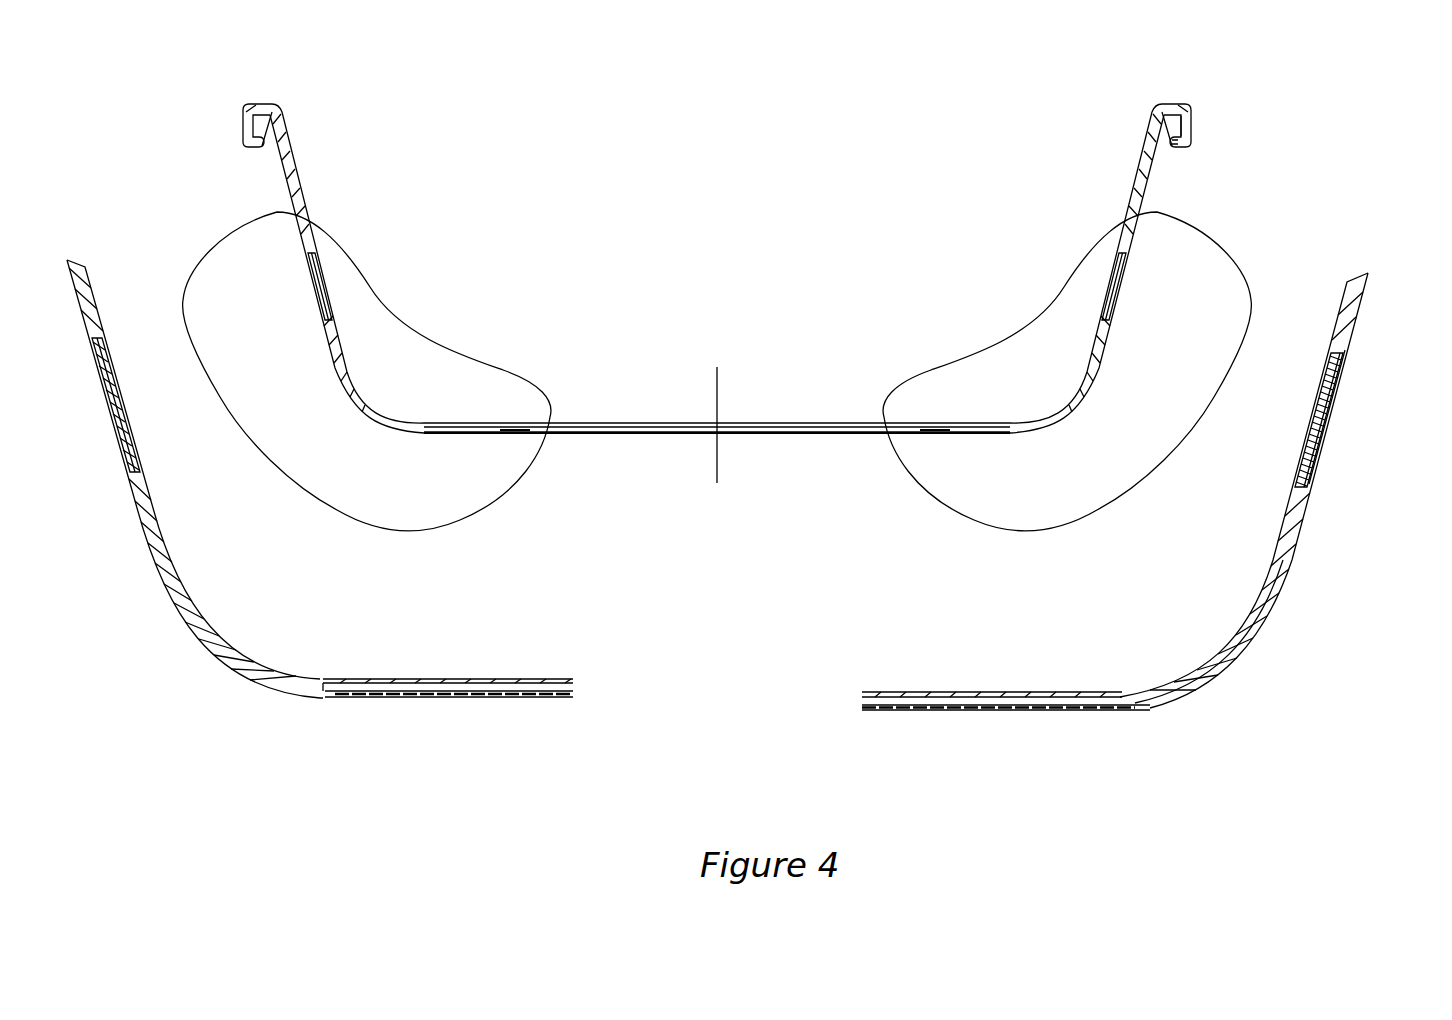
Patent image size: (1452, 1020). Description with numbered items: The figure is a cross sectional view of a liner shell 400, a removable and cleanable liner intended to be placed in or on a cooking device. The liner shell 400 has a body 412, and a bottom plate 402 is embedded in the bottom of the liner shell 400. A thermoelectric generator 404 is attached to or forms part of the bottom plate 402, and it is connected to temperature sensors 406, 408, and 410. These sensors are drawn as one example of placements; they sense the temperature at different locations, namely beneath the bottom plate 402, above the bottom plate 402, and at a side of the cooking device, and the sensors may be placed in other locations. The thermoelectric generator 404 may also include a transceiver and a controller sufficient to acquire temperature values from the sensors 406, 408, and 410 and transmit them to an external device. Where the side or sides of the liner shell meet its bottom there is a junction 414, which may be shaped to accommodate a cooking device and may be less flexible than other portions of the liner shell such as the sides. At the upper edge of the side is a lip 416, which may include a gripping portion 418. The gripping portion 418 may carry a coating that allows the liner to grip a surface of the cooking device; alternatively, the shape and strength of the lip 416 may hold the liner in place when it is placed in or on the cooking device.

The liner shell 400 is at (1308, 128).
The bottom plate 402 is at (424, 688).
The thermoelectric generator 404 is at (1027, 710).
The temperature sensor 406 is at (370, 697).
The temperature sensor 408 is at (1013, 693).
The temperature sensor 410 is at (1322, 440).
The body 412 is at (1136, 201).
The junction 414 is at (1245, 657).
The lip 416 is at (1197, 133).
The gripping portion 418 is at (1166, 147).